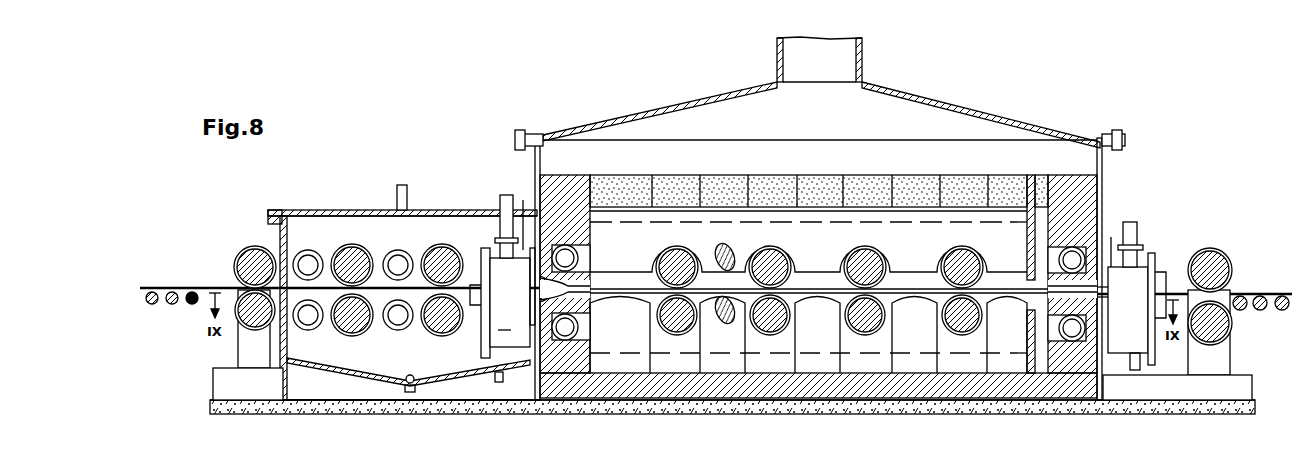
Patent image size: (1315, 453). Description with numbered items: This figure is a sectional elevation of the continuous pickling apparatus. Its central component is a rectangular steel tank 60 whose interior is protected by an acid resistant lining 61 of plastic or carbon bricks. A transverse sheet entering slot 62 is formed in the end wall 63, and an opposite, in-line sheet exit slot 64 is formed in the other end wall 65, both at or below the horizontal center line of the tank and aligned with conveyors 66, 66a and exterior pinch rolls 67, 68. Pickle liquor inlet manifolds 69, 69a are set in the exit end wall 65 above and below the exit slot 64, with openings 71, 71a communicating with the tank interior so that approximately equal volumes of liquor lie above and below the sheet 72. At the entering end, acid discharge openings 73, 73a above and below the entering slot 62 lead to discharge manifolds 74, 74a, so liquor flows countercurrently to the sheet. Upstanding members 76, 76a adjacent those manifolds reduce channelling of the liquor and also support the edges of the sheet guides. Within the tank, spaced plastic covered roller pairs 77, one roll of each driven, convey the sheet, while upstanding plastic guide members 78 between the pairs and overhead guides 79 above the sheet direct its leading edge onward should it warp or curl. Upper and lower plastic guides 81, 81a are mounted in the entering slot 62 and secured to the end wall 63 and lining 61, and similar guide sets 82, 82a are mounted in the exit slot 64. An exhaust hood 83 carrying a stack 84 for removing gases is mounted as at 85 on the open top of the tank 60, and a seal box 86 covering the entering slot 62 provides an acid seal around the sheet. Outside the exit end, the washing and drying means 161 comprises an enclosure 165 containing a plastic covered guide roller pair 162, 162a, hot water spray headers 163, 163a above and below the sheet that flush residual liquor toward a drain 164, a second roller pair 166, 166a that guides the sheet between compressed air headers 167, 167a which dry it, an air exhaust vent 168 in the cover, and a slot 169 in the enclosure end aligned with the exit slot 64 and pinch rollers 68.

The rectangular vessel or tank 60 is at (838, 166).
The pickling acid resistant lining 61 is at (588, 180).
The sheet entering slot 62 is at (1040, 290).
The end wall 63 is at (1097, 160).
The sheet exit slot 64 is at (584, 280).
The end wall 65 is at (552, 251).
The conveyor 66 is at (1280, 312).
The conveyor 66a is at (170, 304).
The exterior pinch rolls 67 is at (1204, 250).
The exterior pinch rolls 68 is at (242, 254).
The pickle liquor inlet manifold 69 is at (570, 252).
The pickle liquor inlet manifold 69a is at (567, 330).
The openings 71 is at (582, 258).
The openings 71a is at (578, 326).
The sheet 72 is at (183, 287).
The acid discharge openings 73 is at (1060, 260).
The acid discharge openings 73a is at (1060, 328).
The discharge manifold 74 is at (1076, 255).
The discharge manifold 74a is at (1076, 335).
The upstanding member 76 is at (1028, 180).
The upstanding member 76a is at (1027, 354).
The plastic covered roller pairs 77 is at (786, 263).
The upstanding plastic guide members 78 is at (746, 353).
The overhead guides 79 is at (826, 290).
The upper plastic guides 81 is at (1100, 289).
The lower plastic guides 81a is at (1097, 297).
The upper guide set 82 is at (540, 285).
The lower guide set 82a is at (540, 298).
The exhaust hood 83 is at (893, 88).
The stack 84 is at (783, 57).
The hood mounting 85 is at (1115, 138).
The seal box 86 is at (1145, 333).
The sheet washing and drying means 161 is at (334, 203).
The plastic covered guide roller 162 is at (447, 251).
The plastic covered guide roller 162a is at (444, 332).
The water spray header 163 is at (401, 253).
The water spray header 163a is at (403, 328).
The drain 164 is at (401, 388).
The enclosure 165 is at (432, 213).
The roller 166 is at (360, 253).
The roller 166a is at (358, 332).
The upper header 167 is at (300, 252).
The lower header 167a is at (318, 328).
The air exhaust vent 168 is at (405, 199).
The slot 169 is at (248, 345).